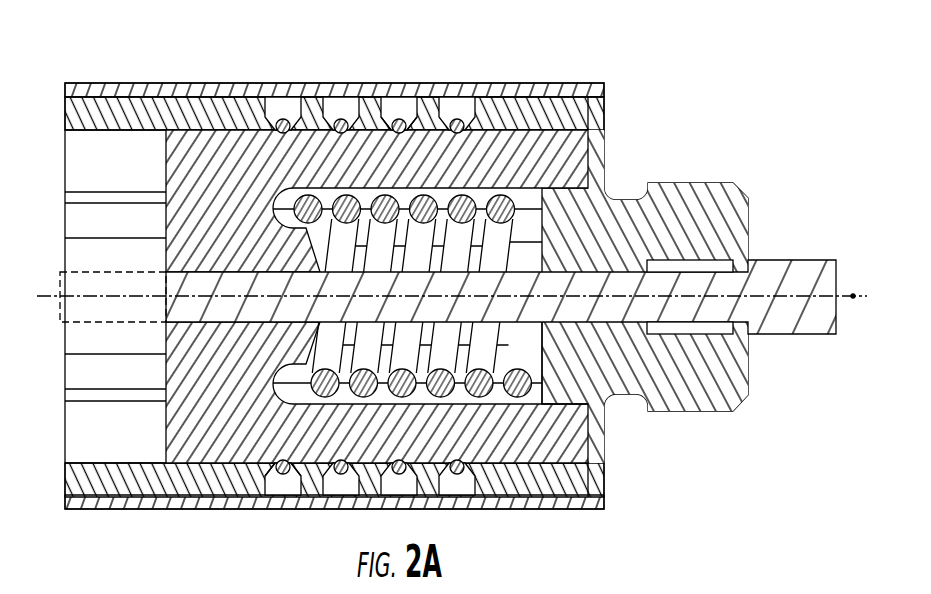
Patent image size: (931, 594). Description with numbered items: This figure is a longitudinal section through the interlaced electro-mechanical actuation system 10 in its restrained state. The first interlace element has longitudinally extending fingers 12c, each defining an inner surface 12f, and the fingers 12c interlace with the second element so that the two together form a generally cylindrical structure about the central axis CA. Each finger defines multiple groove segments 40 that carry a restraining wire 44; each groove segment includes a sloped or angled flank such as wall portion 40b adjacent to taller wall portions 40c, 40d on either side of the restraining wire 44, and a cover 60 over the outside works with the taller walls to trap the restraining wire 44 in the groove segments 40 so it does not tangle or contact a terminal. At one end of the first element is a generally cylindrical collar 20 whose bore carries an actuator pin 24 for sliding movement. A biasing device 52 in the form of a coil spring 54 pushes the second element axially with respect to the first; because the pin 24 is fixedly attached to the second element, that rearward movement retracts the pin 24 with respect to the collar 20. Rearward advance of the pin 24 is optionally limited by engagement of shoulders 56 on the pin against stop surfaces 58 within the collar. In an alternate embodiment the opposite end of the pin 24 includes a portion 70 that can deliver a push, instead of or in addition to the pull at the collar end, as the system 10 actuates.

The interlaced electro-mechanical actuation system 10 is at (446, 286).
The fingers 12c is at (574, 164).
The inner surface 12f is at (598, 118).
The collar 20 is at (712, 412).
The pin 24 is at (778, 265).
The groove segments 40 is at (356, 293).
The sloped wall portion 40b is at (407, 122).
The taller wall portion 40c is at (393, 124).
The taller wall portion 40d is at (274, 471).
The restraining wire 44 is at (284, 118).
The biasing device 52 is at (522, 196).
The coil spring 54 is at (520, 348).
The shoulders 56 is at (731, 267).
The stop surfaces 58 is at (648, 267).
The cover 60 is at (143, 84).
The portion 70 is at (88, 270).
The central axis CA is at (853, 298).